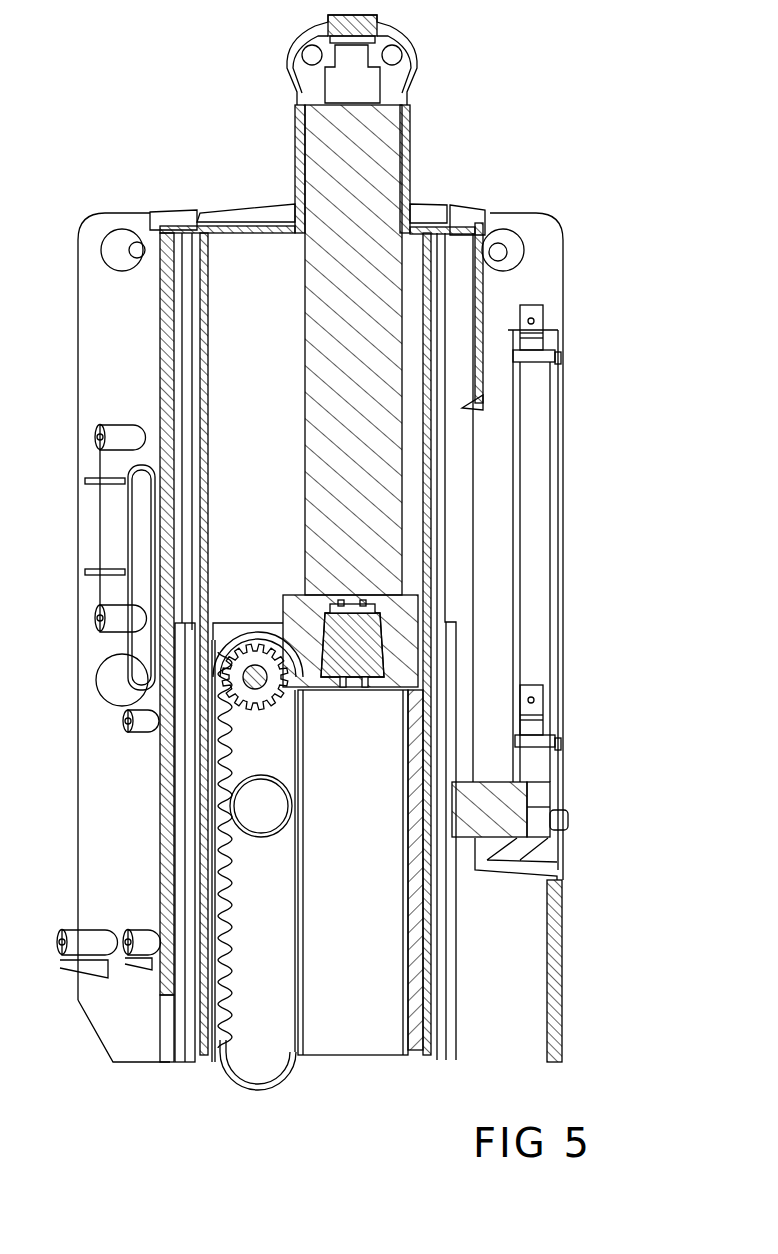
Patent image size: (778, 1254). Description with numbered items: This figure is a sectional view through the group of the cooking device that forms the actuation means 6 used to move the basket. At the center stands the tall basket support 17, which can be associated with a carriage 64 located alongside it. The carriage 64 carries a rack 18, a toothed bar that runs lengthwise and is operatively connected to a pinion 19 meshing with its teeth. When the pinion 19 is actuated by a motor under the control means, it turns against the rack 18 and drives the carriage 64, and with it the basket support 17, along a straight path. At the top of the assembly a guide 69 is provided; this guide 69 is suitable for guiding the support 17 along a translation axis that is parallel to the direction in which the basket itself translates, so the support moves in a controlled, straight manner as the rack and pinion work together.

The actuation means 6 is at (560, 120).
The basket support 17 is at (257, 152).
The rack 18 is at (235, 922).
The pinion 19 is at (258, 655).
The carriage 64 is at (232, 1107).
The guide 69 is at (157, 197).